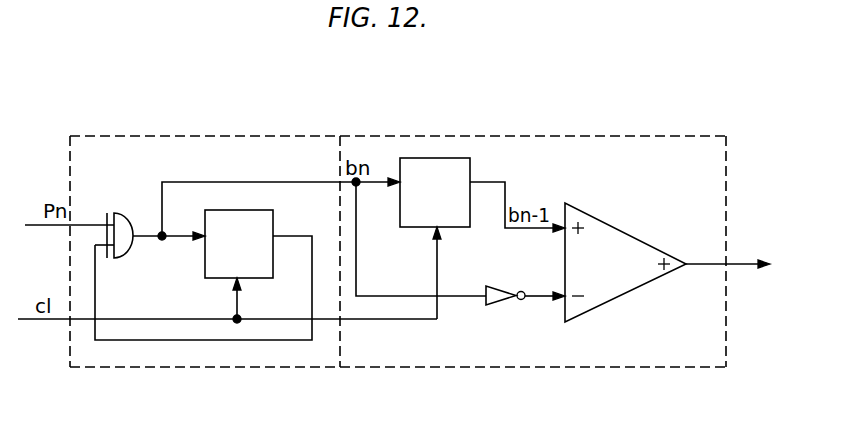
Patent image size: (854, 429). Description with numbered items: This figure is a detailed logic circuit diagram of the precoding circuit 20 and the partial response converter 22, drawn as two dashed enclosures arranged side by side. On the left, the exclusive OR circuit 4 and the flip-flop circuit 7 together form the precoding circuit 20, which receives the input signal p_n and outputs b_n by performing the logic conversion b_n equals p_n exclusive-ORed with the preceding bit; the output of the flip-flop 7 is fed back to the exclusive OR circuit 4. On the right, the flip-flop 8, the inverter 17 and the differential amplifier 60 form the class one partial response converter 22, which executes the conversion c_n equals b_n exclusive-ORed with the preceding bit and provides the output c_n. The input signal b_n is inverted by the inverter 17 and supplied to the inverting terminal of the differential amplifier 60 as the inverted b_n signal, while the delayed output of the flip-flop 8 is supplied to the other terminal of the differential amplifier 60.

The precoding circuit 20 is at (220, 136).
The partial response converter 22 is at (590, 136).
The exclusive OR circuit 4 is at (150, 250).
The flip-flop circuit 7 is at (252, 266).
The flip-flop 8 is at (434, 238).
The inverter 17 is at (498, 305).
The differential amplifier 60 is at (618, 225).